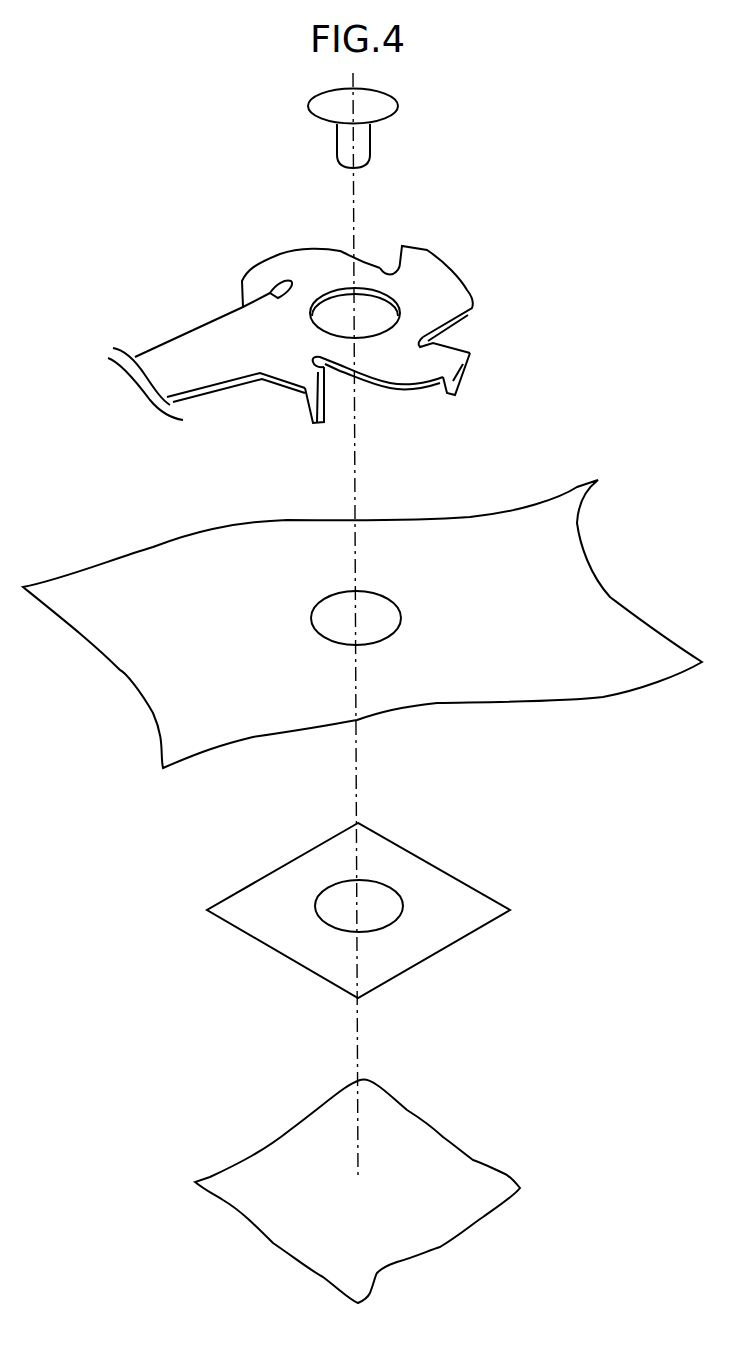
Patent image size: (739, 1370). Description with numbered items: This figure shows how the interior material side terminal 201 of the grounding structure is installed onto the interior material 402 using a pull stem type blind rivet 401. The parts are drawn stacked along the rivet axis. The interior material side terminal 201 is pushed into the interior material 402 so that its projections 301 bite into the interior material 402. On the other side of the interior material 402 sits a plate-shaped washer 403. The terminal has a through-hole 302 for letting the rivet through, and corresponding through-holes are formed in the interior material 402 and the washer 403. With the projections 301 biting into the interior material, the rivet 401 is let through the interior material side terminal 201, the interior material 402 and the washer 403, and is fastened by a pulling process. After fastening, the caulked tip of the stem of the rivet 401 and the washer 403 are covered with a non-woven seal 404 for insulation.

The interior material side terminal 201 is at (152, 362).
The projections 301 is at (382, 263).
The through-hole 302 is at (322, 330).
The pull stem type blind rivet 401 is at (384, 99).
The interior material 402 is at (607, 603).
The plate-shaped washer 403 is at (463, 897).
The non-woven seal 404 is at (460, 1173).